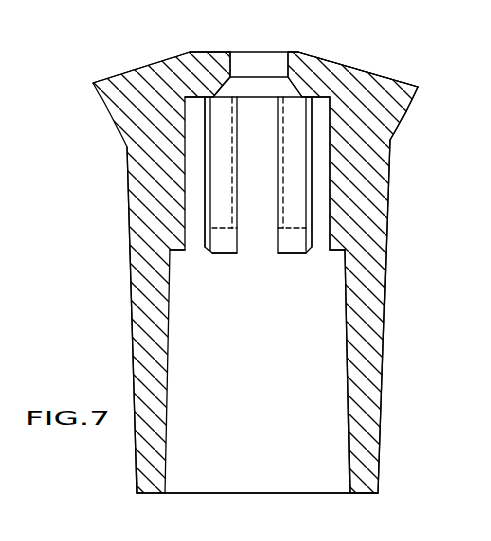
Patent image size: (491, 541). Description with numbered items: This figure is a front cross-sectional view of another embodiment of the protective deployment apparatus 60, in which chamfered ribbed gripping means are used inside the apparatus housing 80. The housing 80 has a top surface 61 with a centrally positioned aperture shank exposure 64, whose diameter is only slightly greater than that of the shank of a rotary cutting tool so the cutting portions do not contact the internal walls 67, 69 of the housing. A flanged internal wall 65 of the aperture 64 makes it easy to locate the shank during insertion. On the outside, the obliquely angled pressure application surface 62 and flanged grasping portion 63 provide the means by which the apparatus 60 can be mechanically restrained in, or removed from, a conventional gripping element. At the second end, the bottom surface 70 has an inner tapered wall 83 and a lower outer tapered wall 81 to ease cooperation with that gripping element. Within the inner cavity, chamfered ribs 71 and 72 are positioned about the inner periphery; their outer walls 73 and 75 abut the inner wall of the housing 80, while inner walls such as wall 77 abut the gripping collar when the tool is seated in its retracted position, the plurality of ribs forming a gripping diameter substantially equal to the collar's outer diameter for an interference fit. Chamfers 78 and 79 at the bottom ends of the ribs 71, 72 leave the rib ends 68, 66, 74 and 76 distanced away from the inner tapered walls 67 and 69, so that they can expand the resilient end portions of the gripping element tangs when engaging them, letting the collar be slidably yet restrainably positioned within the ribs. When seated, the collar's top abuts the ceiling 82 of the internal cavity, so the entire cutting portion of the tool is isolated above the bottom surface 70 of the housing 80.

The protective deployment apparatus 60 is at (408, 74).
The top surface 61 is at (303, 54).
The pressure application surface 62 is at (338, 82).
The flanged grasping portion 63 is at (420, 89).
The aperture shank exposure 64 is at (232, 62).
The flanged internal wall 65 is at (228, 78).
The rib end 66 is at (347, 252).
The inner tapered wall 67 is at (348, 370).
The rib end 68 is at (185, 252).
The inner tapered wall 69 is at (130, 328).
The bottom surface 70 is at (147, 494).
The chamfered rib 71 is at (212, 232).
The chamfered rib 72 is at (308, 230).
The outer wall of rib 73 is at (207, 178).
The rib end 74 is at (224, 254).
The outer wall of rib 75 is at (313, 122).
The rib end 76 is at (297, 254).
The inner wall of rib 77 is at (330, 155).
The chamfer 78 is at (333, 248).
The chamfer 79 is at (185, 230).
The apparatus housing 80 is at (390, 172).
The lower outer tapered wall 81 is at (378, 494).
The ceiling 82 is at (172, 75).
The inner tapered wall 83 is at (352, 492).